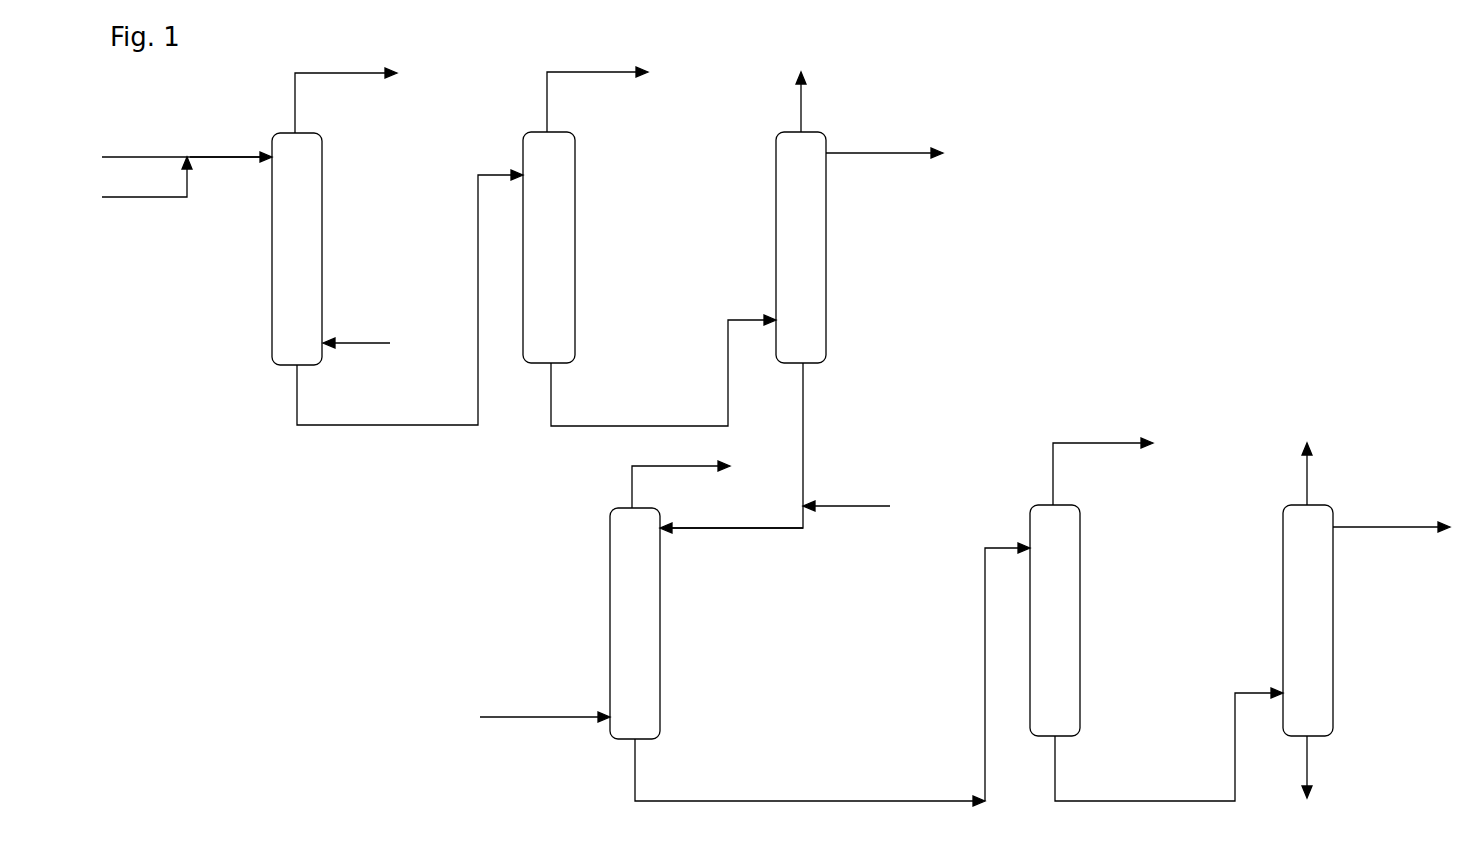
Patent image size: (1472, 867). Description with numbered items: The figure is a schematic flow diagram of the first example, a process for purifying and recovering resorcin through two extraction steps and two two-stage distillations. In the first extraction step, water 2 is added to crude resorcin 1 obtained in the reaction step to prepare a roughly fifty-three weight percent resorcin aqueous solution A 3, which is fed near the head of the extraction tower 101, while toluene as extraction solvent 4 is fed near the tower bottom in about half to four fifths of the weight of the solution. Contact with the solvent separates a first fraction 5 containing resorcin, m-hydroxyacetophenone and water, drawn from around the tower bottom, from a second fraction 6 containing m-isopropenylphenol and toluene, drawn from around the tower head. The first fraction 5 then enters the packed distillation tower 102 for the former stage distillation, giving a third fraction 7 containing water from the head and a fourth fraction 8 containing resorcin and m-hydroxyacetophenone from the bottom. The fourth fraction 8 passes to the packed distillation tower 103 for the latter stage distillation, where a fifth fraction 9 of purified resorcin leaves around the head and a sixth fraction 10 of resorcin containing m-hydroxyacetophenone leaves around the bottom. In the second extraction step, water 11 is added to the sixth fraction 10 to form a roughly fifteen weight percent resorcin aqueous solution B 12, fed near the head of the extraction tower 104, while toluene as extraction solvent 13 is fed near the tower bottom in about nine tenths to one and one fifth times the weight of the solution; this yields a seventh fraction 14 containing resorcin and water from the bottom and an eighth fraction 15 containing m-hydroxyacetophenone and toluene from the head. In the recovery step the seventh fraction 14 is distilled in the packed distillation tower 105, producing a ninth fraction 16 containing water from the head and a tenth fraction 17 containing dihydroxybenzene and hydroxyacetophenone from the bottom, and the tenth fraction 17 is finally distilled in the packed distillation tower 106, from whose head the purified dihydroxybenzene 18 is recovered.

The crude resorcin 1 is at (187, 149).
The water 2 is at (147, 177).
The resorcin aqueous solution A 3 is at (234, 143).
The extraction solvent (1) 4 is at (356, 336).
The first fraction 5 is at (287, 393).
The second fraction 6 is at (331, 91).
The third fraction 7 is at (582, 89).
The fourth fraction 8 is at (578, 418).
The fifth fraction 9 is at (860, 135).
The sixth fraction 10 is at (818, 418).
The water 11 is at (846, 498).
The resorcin aqueous solution B 12 is at (719, 541).
The extraction solvent (2) 13 is at (545, 710).
The seventh fraction 14 is at (648, 772).
The eighth fraction 15 is at (617, 493).
The ninth fraction 16 is at (1089, 460).
The tenth fraction 17 is at (1085, 790).
The dihydroxybenzene to be recovered 18 is at (1369, 510).
The extraction tower in first extraction step 101 is at (310, 253).
The distillation tower for former distillation of distillation step 102 is at (567, 252).
The distillation tower for latter distillation of distillation step 103 is at (813, 250).
The extraction tower in second extraction step 104 is at (622, 627).
The distillation tower for former distillation of recovery step 105 is at (1073, 625).
The distillation tower for latter distillation of recovery step 106 is at (1322, 623).